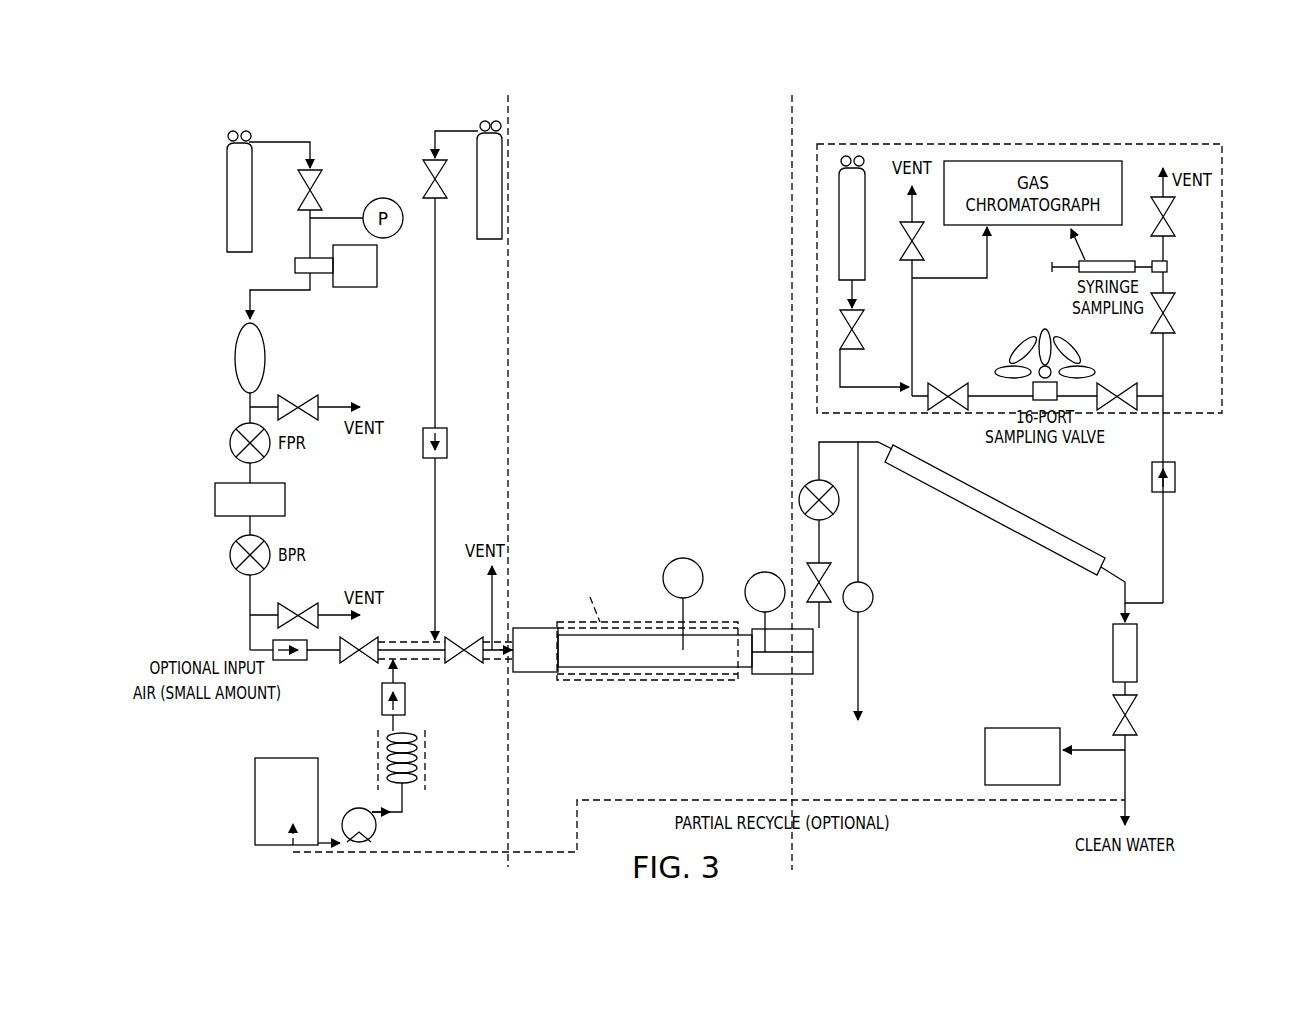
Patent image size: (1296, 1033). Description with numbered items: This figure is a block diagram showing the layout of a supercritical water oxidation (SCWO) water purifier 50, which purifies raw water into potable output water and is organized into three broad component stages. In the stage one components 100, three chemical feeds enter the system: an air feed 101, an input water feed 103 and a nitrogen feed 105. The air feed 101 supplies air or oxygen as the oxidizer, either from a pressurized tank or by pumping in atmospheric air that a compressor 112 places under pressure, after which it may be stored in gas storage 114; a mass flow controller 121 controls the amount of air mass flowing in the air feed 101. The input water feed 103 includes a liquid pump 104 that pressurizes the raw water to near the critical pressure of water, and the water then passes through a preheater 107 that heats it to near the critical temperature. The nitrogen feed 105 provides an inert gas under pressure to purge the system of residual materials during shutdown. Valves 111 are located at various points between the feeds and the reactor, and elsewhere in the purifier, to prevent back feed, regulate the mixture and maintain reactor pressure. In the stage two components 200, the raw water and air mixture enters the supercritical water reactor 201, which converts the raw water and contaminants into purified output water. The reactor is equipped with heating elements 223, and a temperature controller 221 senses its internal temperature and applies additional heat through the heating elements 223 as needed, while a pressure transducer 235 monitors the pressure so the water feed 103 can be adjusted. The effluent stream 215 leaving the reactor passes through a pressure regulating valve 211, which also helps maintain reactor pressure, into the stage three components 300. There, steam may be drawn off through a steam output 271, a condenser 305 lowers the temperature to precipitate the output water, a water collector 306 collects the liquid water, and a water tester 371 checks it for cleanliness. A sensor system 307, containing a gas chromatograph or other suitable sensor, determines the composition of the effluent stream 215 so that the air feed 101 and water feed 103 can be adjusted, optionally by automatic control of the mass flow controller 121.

The stage one components 100 is at (178, 138).
The air feed 101 is at (227, 190).
The valves 111 is at (322, 180).
The compressor 112 is at (295, 263).
The gas storage 114 is at (236, 350).
The mass flow controller 121 is at (215, 500).
The nitrogen feed 105 is at (488, 240).
The preheater 107 is at (416, 734).
The liquid pump 104 is at (352, 812).
The input water feed 103 is at (255, 798).
The stage two components 200 is at (574, 143).
The supercritical water reactor 201 is at (738, 660).
The heating elements 223 is at (570, 682).
The temperature controller 221 is at (683, 558).
The pressure transducer 235 is at (758, 572).
The pressure regulating valve 211 is at (806, 487).
The effluent stream 215 is at (845, 442).
The steam output 271 is at (873, 597).
The SCWO water purifier 50 is at (1116, 124).
The stage three components 300 is at (1238, 157).
The condenser 305 is at (1000, 525).
The sensor system 307 is at (1184, 420).
The water collector 306 is at (1113, 652).
The water tester 371 is at (1018, 728).